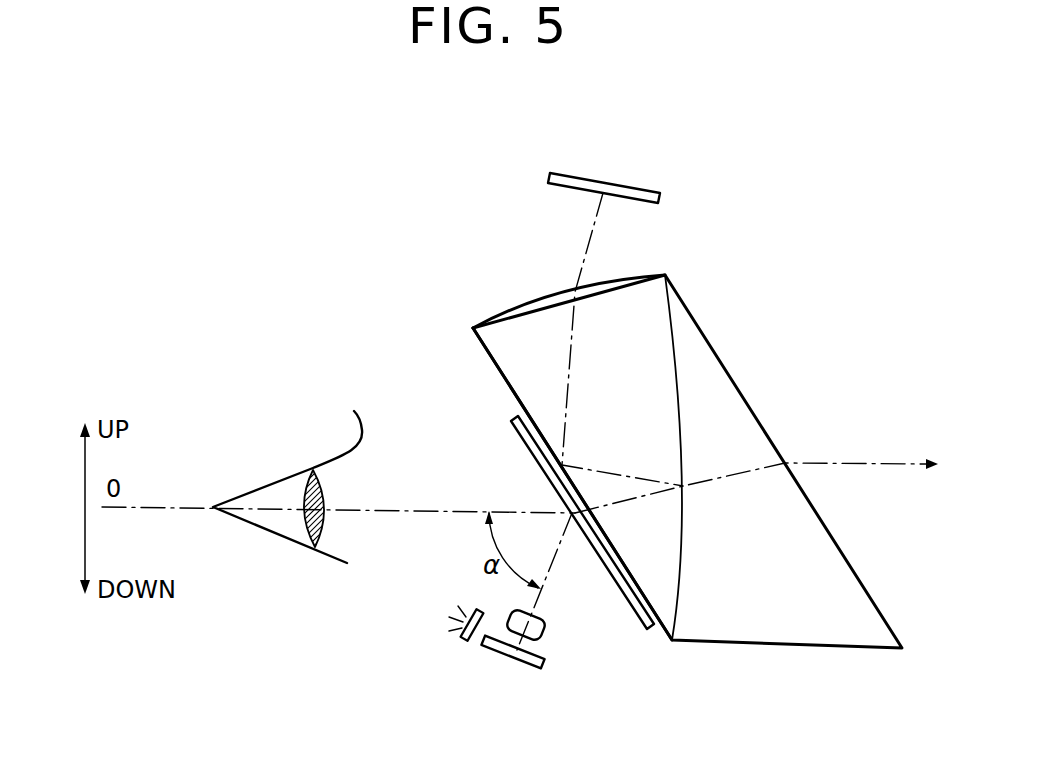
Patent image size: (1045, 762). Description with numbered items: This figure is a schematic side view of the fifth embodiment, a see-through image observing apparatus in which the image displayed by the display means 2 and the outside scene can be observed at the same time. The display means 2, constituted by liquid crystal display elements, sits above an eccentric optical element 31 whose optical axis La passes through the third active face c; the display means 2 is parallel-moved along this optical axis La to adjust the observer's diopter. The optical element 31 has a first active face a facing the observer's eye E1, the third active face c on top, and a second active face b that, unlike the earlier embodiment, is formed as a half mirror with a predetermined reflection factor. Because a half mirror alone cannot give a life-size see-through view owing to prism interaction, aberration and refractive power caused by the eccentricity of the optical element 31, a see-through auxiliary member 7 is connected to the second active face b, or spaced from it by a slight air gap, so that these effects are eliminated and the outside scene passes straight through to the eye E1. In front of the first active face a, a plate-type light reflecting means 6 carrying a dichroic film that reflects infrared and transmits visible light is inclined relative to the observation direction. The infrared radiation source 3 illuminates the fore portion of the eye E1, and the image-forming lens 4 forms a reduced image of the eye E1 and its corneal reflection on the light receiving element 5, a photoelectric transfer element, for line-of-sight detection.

The display means 2 is at (653, 191).
The infrared radiation source 3 is at (469, 641).
The image-forming lens 4 is at (542, 631).
The light receiving element 5 is at (545, 667).
The light reflecting means 6 is at (650, 634).
The see-through auxiliary member 7 is at (671, 466).
The optical element 31 is at (718, 457).
The eye E1 is at (293, 543).
The first active face a is at (498, 368).
The second active face b is at (677, 367).
The third active face c is at (623, 287).
The optical axis La is at (585, 256).